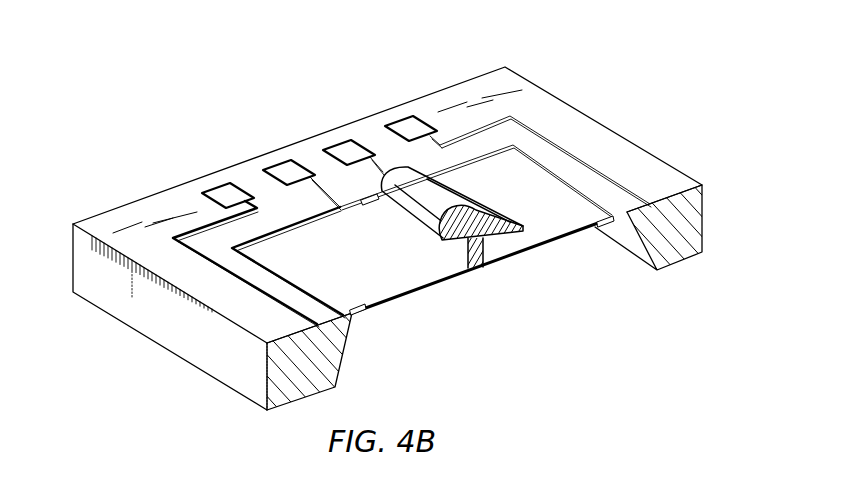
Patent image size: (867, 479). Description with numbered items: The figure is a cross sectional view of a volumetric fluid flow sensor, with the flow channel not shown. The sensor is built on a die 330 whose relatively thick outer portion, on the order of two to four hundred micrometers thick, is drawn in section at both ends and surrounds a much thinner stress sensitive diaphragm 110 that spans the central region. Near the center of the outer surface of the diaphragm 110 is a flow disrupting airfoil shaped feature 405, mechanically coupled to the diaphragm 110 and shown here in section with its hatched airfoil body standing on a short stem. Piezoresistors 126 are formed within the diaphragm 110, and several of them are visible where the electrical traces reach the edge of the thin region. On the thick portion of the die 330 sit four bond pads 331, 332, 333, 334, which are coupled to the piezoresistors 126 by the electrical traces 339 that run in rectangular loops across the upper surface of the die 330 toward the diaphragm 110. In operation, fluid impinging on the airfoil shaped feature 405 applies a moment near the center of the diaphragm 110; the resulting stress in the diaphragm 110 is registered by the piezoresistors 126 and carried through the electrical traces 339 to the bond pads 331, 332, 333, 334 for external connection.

The die 330 is at (258, 318).
The stress sensitive diaphragm 110 is at (412, 290).
The bond pad 331 is at (222, 190).
The bond pad 332 is at (280, 157).
The bond pad 333 is at (345, 147).
The bond pad 334 is at (407, 124).
The electrical traces 339 is at (571, 150).
The piezoresistors 126 is at (361, 207).
The airfoil shaped feature 405 is at (427, 220).